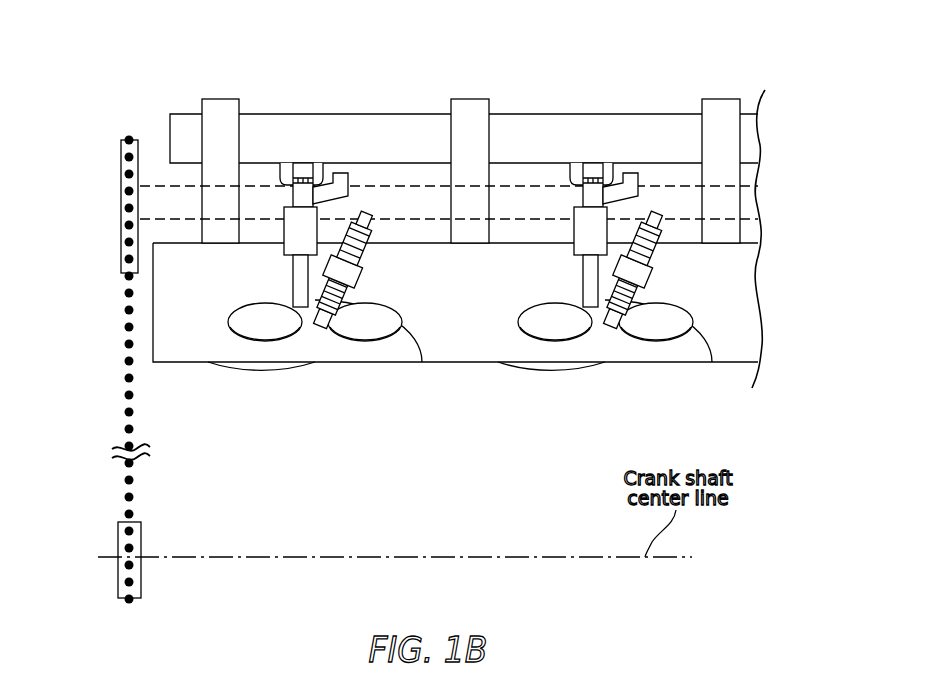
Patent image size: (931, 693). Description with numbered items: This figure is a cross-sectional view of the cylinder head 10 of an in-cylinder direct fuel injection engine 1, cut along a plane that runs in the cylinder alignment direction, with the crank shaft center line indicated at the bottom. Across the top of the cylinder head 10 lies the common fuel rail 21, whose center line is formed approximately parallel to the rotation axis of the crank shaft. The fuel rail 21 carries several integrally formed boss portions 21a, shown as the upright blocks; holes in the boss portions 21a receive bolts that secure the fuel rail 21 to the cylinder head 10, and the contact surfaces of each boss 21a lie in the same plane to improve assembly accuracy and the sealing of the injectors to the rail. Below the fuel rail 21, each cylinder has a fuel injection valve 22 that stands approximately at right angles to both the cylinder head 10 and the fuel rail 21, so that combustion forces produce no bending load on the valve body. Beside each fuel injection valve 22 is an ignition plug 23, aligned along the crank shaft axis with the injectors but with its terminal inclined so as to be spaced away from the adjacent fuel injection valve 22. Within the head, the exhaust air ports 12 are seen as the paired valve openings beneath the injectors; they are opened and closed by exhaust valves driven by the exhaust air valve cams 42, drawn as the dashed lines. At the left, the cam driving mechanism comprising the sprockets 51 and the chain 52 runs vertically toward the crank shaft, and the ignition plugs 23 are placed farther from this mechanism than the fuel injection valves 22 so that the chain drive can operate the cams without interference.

The in-cylinder direct fuel injection engine 1 is at (768, 65).
The cylinder head 10 is at (183, 363).
The exhaust air ports 12 is at (252, 322).
The fuel rail 21 is at (293, 122).
The boss portions 21a is at (222, 99).
The fuel injection valves 22 is at (284, 247).
The ignition plugs 23 is at (356, 262).
The exhaust air valve cams 42 is at (153, 186).
The sprockets 51 is at (121, 183).
The chain 52 is at (124, 394).